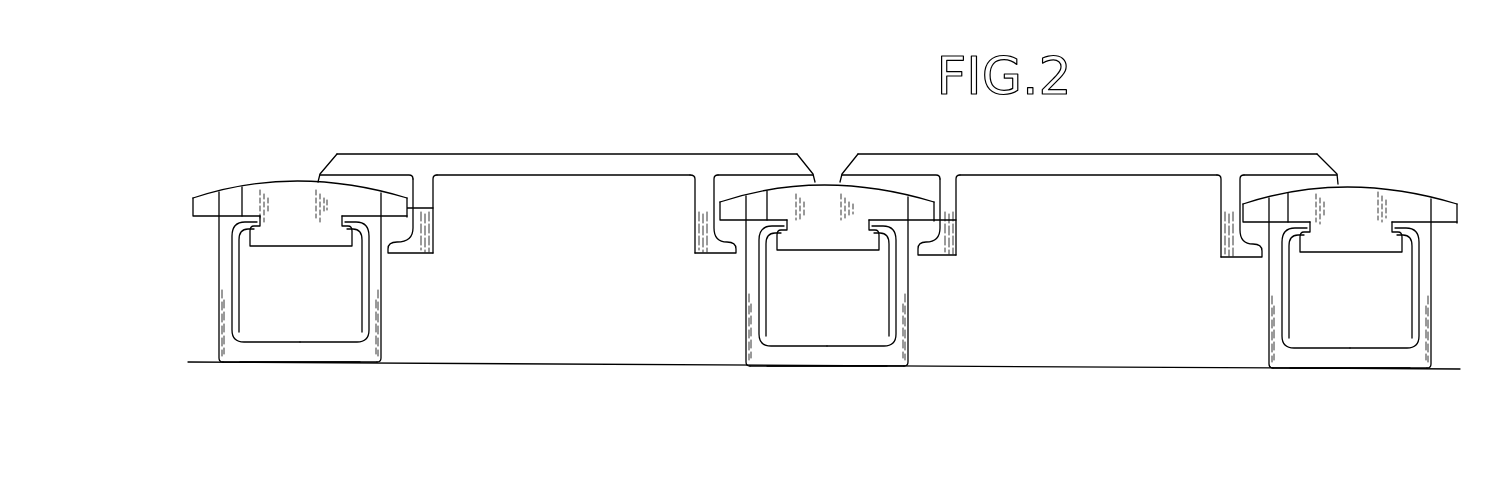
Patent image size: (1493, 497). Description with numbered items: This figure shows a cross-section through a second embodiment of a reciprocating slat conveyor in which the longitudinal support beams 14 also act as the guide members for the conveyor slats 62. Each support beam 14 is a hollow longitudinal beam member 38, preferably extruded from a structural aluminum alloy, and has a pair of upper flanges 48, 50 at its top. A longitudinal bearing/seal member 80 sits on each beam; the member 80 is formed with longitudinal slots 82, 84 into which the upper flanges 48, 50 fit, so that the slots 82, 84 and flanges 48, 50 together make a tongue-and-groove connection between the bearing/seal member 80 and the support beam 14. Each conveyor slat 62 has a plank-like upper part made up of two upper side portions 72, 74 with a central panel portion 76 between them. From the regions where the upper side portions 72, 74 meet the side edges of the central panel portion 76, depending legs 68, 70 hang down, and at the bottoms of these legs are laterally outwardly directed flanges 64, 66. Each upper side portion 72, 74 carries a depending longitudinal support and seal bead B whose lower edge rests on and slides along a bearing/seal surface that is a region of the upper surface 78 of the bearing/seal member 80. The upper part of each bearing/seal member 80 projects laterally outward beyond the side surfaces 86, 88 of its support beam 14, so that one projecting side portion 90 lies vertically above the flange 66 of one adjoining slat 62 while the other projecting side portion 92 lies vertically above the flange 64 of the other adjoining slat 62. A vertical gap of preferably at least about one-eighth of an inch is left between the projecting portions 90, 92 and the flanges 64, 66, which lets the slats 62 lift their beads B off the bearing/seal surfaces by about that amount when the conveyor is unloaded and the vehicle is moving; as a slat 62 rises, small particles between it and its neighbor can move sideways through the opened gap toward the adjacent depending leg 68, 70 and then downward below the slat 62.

The support beam 14 is at (825, 382).
The hollow longitudinal beam member 38 is at (825, 388).
The upper flange 48 is at (765, 164).
The upper flange 50 is at (899, 165).
The conveyor slat 62 is at (684, 151).
The laterally outwardly directed flange 64 is at (400, 250).
The laterally outwardly directed flange 66 is at (712, 252).
The depending leg 68 is at (433, 197).
The depending leg 70 is at (693, 193).
The upper side portion 72 is at (342, 160).
The upper side portion 74 is at (773, 161).
The central panel portion 76 is at (566, 153).
The upper surface 78 is at (825, 161).
The bearing/seal member 80 is at (826, 259).
The longitudinal slot 82 is at (791, 285).
The longitudinal slot 84 is at (859, 285).
The side surface 86 is at (715, 280).
The side surface 88 is at (929, 280).
The projecting side portion 90 is at (742, 239).
The projecting side portion 92 is at (941, 230).
The support and seal bead B is at (836, 212).